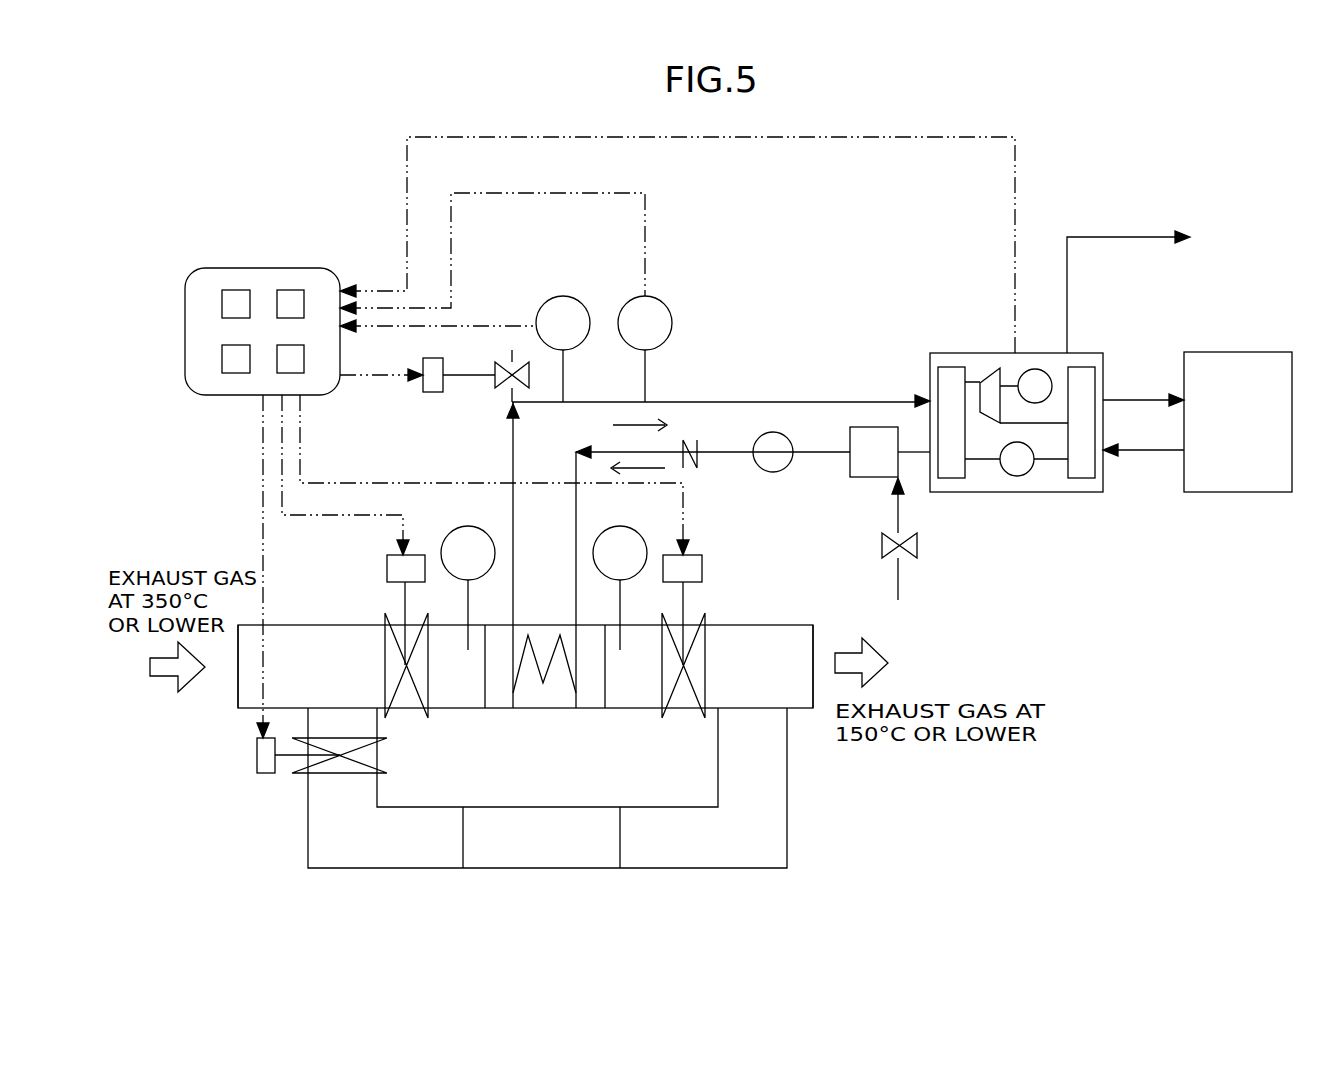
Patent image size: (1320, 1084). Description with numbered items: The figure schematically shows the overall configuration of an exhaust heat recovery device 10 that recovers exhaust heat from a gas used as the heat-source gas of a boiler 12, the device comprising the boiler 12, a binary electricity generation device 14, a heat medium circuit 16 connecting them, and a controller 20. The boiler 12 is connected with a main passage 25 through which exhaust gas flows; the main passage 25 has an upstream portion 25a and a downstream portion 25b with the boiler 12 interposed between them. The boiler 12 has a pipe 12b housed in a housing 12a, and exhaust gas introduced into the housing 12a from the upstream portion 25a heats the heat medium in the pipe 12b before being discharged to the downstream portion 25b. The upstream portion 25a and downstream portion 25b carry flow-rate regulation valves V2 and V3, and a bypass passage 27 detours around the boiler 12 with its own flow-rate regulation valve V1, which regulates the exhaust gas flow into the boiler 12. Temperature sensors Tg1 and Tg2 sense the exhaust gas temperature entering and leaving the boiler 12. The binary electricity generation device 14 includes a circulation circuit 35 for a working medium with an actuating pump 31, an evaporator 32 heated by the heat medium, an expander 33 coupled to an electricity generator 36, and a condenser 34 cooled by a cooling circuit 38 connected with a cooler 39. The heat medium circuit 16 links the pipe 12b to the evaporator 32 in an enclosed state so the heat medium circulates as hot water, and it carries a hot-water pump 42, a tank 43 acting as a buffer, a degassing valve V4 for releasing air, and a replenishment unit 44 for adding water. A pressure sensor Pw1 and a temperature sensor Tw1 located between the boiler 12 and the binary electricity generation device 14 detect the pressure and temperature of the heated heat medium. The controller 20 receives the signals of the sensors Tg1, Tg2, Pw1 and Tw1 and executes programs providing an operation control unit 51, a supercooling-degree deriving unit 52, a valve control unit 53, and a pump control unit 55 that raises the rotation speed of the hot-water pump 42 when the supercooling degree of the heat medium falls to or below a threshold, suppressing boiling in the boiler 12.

The exhaust heat recovery device 10 is at (342, 136).
The controller 20 is at (228, 268).
The operation control unit 51 is at (222, 303).
The supercooling-degree deriving unit 52 is at (222, 358).
The valve control unit 53 is at (290, 290).
The pump control unit 55 is at (277, 355).
The binary electricity generation device 14 is at (965, 345).
The heat medium circuit 16 is at (771, 384).
The actuating pump 31 is at (1022, 478).
The evaporator 32 is at (953, 478).
The expander 33 is at (988, 369).
The condenser 34 is at (1085, 367).
The circulation circuit 35 is at (1055, 462).
The electricity generator 36 is at (1040, 369).
The cooling circuit 38 is at (1150, 452).
The cooler 39 is at (1238, 492).
The hot-water pump 42 is at (773, 472).
The tank 43 is at (862, 478).
The replenishment unit 44 is at (903, 518).
The main passage 25 is at (778, 604).
The upstream portion 25a is at (292, 625).
The downstream portion 25b is at (807, 625).
The bypass passage 27 is at (700, 868).
The boiler 12 is at (533, 733).
The housing 12a is at (513, 710).
The pipe 12b is at (548, 682).
The flow-rate regulation valve V1 is at (257, 760).
The flow-rate regulation valve V2 is at (385, 613).
The flow-rate regulation valve V3 is at (702, 568).
The degassing valve V4 is at (468, 378).
The temperature sensor Tg1 is at (467, 526).
The temperature sensor Tg2 is at (622, 526).
The temperature sensor Tw1 is at (563, 296).
The pressure sensor Pw1 is at (650, 296).